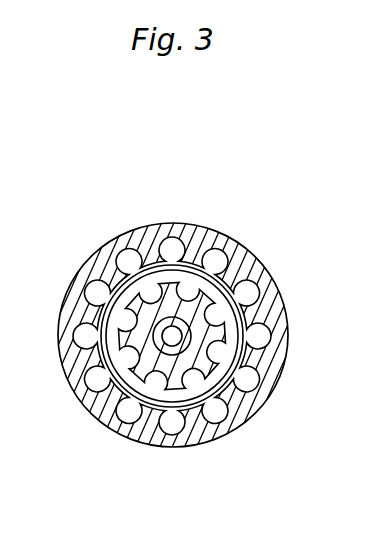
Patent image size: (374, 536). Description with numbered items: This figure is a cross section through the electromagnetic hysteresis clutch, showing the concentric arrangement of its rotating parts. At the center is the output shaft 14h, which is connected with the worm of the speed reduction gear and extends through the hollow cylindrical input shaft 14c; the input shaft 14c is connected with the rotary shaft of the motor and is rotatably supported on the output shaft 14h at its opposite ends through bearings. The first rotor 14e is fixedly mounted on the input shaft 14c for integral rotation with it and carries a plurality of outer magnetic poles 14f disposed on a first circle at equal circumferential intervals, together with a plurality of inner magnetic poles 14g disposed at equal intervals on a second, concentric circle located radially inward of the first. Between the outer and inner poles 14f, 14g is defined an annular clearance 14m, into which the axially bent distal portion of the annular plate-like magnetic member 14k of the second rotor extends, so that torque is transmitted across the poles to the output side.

The first rotor 14e is at (77, 278).
The outer magnetic poles 14f is at (198, 262).
The annular plate-like magnetic member 14k is at (236, 279).
The annular clearance 14m is at (245, 313).
The inner magnetic poles 14g is at (170, 282).
The hollow cylindrical input shaft 14c is at (167, 338).
The output shaft 14h is at (175, 337).